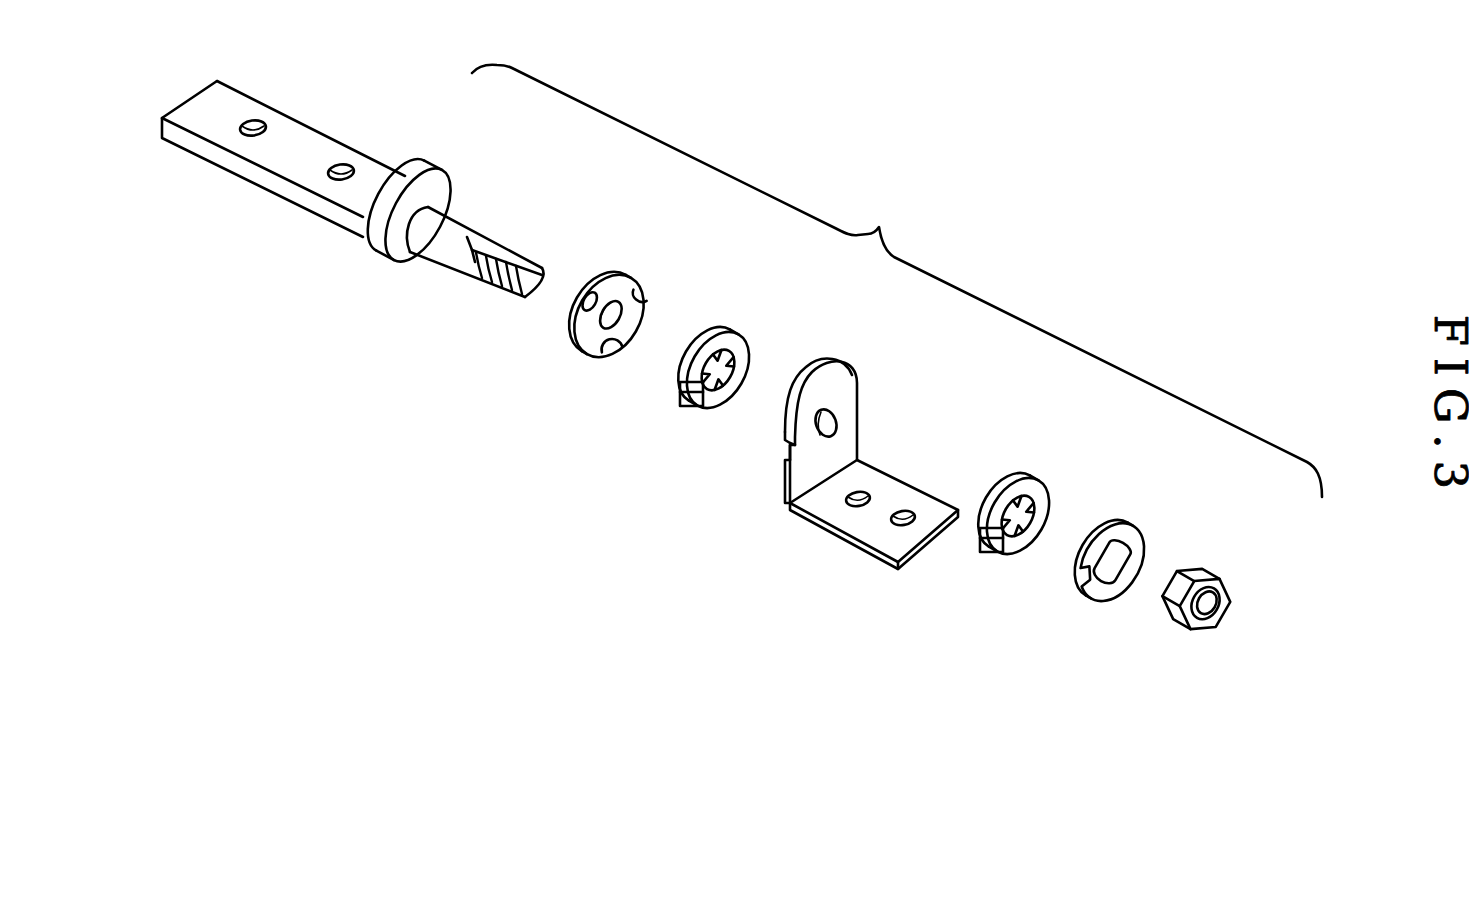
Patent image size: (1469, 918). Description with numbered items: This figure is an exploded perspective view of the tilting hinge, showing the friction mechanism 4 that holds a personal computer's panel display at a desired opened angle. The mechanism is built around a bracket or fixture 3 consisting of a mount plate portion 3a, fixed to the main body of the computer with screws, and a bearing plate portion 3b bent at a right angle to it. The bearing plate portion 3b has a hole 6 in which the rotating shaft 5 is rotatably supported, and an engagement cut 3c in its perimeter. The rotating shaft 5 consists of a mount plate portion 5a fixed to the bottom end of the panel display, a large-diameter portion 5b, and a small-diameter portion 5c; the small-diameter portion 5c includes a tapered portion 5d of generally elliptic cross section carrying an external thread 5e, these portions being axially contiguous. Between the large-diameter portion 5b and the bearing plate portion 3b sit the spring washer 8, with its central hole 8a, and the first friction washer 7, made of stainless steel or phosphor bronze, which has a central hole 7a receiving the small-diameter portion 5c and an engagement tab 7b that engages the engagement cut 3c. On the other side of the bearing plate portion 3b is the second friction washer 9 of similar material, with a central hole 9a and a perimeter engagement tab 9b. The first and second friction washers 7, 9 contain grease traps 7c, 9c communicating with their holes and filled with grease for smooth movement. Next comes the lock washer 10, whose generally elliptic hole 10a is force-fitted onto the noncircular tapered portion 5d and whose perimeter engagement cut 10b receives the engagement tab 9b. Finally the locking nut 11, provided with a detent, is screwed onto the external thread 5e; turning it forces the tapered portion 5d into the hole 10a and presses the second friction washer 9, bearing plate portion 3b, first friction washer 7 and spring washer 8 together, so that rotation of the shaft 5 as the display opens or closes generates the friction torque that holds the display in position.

The bracket or fixture 3 is at (770, 515).
The mount plate portion 3a is at (844, 521).
The bearing plate portion 3b is at (806, 418).
The engagement cut 3c is at (782, 450).
The friction mechanism 4 is at (889, 218).
The rotating shaft 5 is at (400, 144).
The mount plate portion 5a is at (259, 153).
The large-diameter portion 5b is at (434, 178).
The small-diameter portion 5c is at (463, 300).
The tapered portion 5d is at (504, 256).
The external thread 5e is at (499, 273).
The hole 6 is at (838, 426).
The first friction washer 7 is at (718, 360).
The hole 7a is at (718, 370).
The engagement tab 7b is at (684, 400).
The grease traps 7c is at (718, 369).
The spring washer 8 is at (590, 322).
The hole 8a is at (598, 352).
The second friction washer 9 is at (1024, 515).
The hole 9a is at (1018, 516).
The engagement tab 9b is at (988, 550).
The grease traps 9c is at (1018, 515).
The lock washer 10 is at (1085, 581).
The hole 10a is at (1116, 580).
The engagement cut 10b is at (1084, 578).
The locking nut 11 is at (1218, 580).